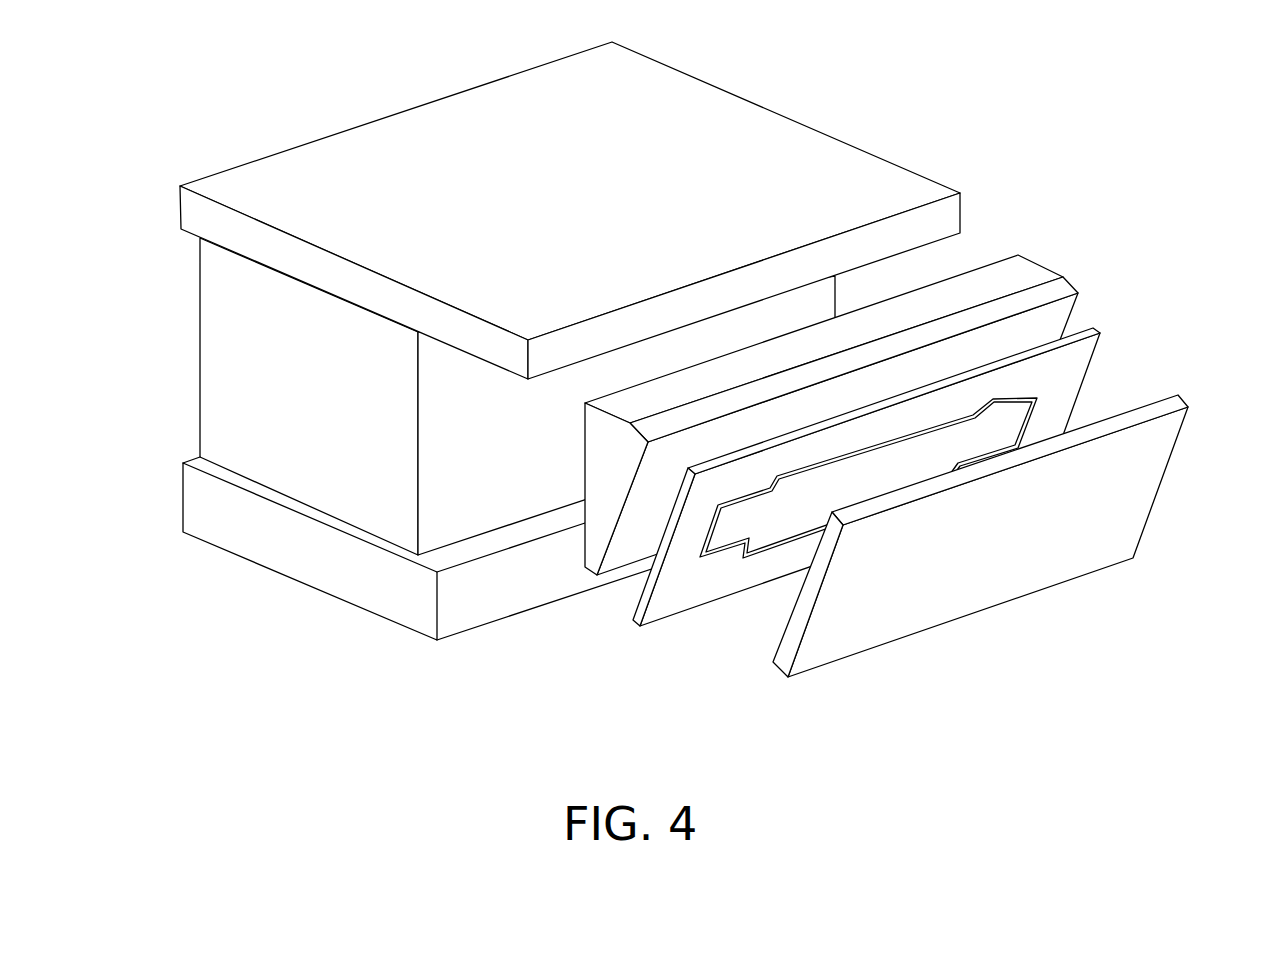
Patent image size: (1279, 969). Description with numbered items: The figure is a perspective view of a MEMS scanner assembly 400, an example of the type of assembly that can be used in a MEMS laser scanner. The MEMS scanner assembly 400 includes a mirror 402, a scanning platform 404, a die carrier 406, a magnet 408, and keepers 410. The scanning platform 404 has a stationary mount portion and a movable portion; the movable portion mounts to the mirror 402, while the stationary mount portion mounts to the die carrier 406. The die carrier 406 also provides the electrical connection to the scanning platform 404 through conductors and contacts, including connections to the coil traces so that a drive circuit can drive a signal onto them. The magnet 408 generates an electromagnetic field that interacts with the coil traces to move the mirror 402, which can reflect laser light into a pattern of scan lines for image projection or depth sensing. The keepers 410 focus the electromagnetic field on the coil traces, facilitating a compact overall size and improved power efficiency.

The MEMS scanner assembly 400 is at (688, 409).
The mirror 402 is at (1168, 392).
The scanning platform 404 is at (1094, 326).
The die carrier 406 is at (1040, 258).
The magnet 408 is at (200, 355).
The keepers 410 is at (768, 112).